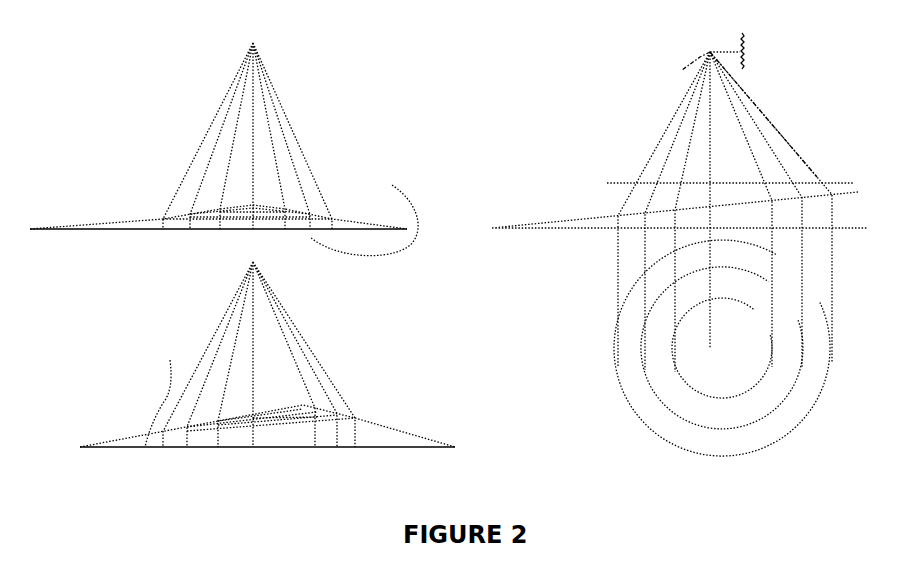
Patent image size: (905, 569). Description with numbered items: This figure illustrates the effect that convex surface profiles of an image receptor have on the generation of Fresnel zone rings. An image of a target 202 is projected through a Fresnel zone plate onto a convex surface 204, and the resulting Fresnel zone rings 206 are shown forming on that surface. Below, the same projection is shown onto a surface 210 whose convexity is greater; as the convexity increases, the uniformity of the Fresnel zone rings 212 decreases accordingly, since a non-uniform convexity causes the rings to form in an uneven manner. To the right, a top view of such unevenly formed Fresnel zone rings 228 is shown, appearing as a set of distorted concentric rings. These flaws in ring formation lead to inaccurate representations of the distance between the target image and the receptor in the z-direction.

The target 202 is at (253, 45).
The convex surface 204 is at (127, 213).
The Fresnel zone rings 206 is at (364, 205).
The surface 210 is at (170, 360).
The Fresnel zone rings 212 is at (317, 417).
The unevenly formed Fresnel zone rings 228 is at (615, 388).